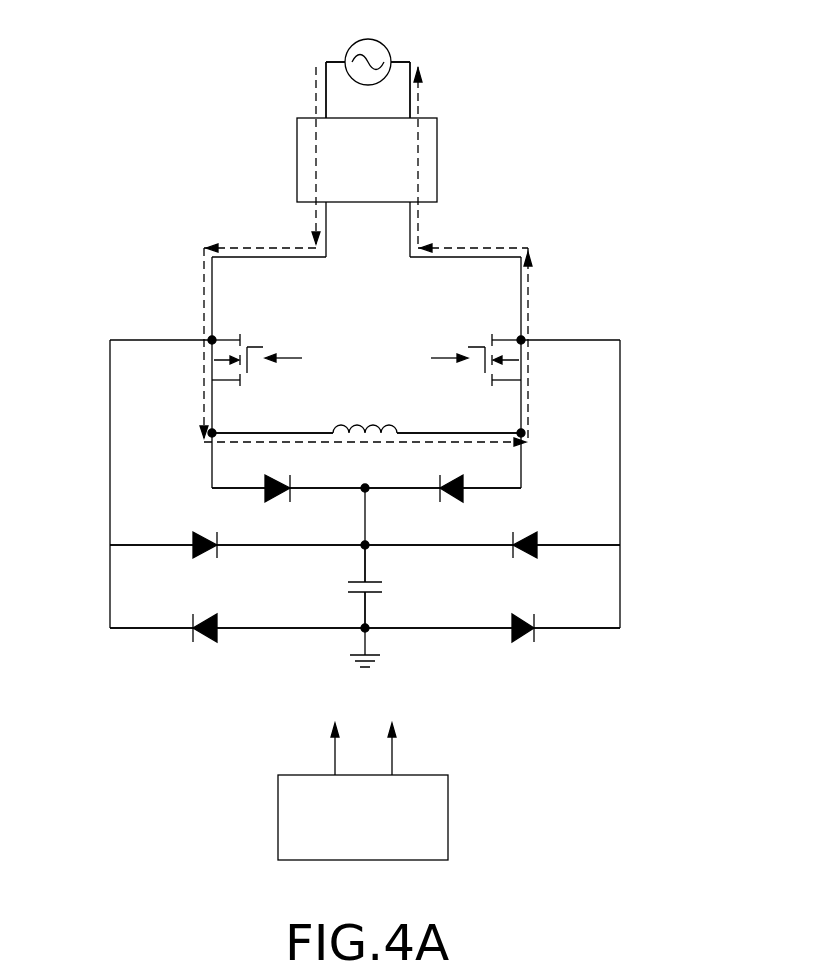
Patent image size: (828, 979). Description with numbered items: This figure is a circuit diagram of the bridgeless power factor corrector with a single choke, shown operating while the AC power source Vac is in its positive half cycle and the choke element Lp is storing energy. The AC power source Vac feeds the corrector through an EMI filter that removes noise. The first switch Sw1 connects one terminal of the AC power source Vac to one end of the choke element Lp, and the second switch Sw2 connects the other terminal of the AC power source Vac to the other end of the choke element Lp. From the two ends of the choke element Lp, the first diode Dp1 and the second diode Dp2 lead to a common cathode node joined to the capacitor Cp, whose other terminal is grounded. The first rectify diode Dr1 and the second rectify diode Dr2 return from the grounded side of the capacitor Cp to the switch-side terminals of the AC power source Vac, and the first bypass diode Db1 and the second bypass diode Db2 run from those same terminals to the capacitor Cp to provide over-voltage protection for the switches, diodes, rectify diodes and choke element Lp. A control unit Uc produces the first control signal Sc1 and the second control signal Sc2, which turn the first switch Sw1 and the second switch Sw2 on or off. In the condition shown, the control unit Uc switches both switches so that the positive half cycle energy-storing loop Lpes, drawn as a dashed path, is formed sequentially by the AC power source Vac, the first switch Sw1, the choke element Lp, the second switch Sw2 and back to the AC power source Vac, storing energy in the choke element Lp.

The AC power source Vac is at (368, 50).
The positive half cycle energy-storing loop Lpes is at (260, 247).
The first switch Sw1 is at (255, 354).
The second switch Sw2 is at (477, 354).
The first control signal Sc1 is at (310, 561).
The second control signal Sc2 is at (420, 561).
The choke element Lp is at (365, 417).
The first diode Dp1 is at (281, 477).
The second diode Dp2 is at (456, 477).
The first bypass diode Db1 is at (209, 532).
The second bypass diode Db2 is at (528, 532).
The capacitor Cp is at (351, 589).
The first rectify diode Dr1 is at (225, 622).
The second rectify diode Dr2 is at (544, 622).
The control unit Uc is at (442, 817).